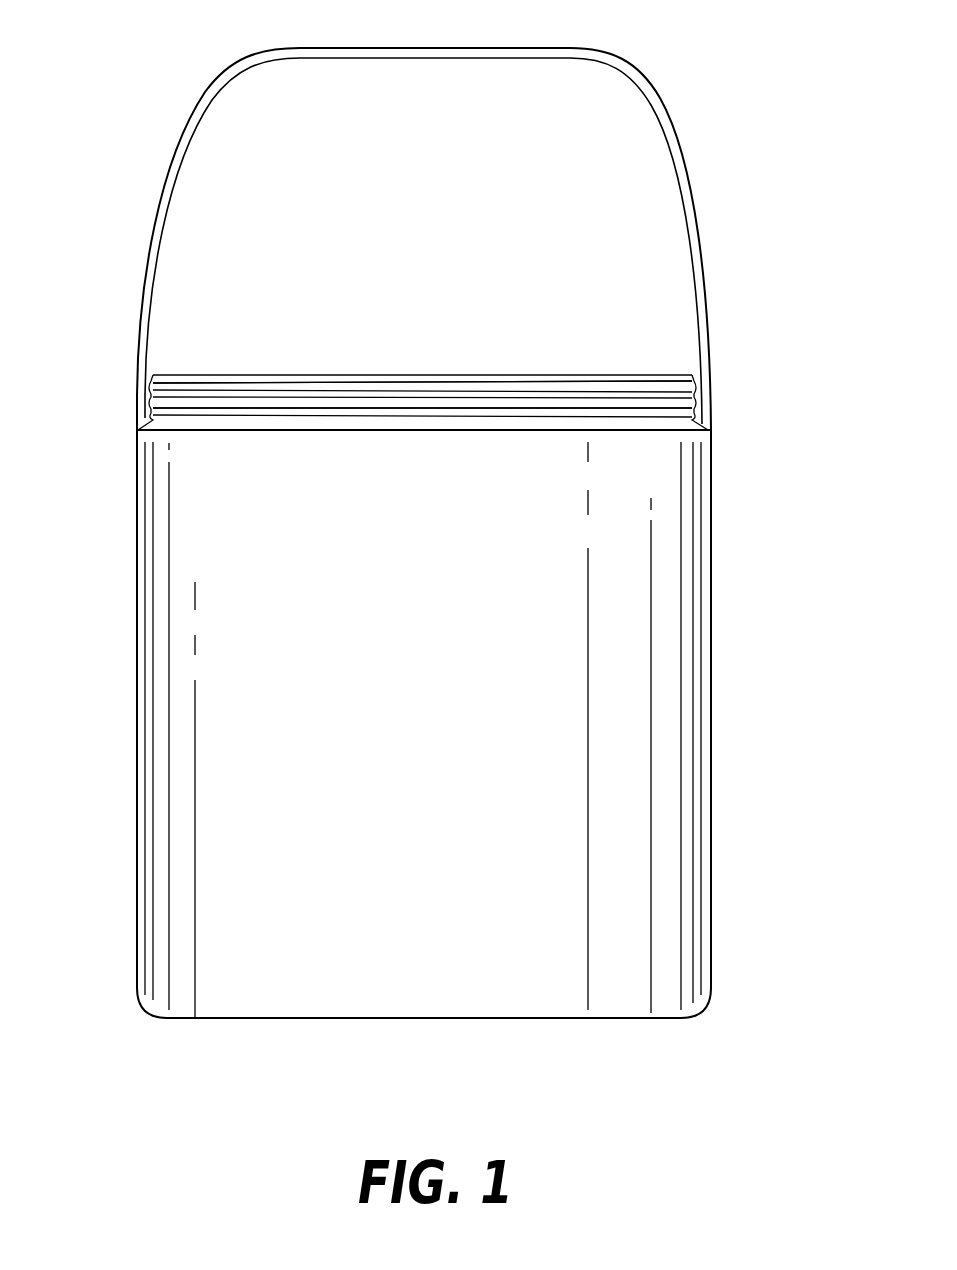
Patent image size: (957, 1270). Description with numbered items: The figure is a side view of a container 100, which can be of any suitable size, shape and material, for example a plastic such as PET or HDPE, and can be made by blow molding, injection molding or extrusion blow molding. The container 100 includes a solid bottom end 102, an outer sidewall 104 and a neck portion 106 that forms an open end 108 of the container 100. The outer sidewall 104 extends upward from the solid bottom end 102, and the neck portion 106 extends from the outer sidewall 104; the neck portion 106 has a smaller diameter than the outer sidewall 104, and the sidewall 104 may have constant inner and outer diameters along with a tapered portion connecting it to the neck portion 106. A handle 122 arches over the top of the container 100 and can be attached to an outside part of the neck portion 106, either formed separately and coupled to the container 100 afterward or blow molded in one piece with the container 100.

The container 100 is at (437, 567).
The solid bottom end 102 is at (195, 1022).
The outer sidewall 104 is at (136, 645).
The neck portion 106 is at (141, 405).
The open end 108 is at (378, 368).
The handle 122 is at (654, 98).